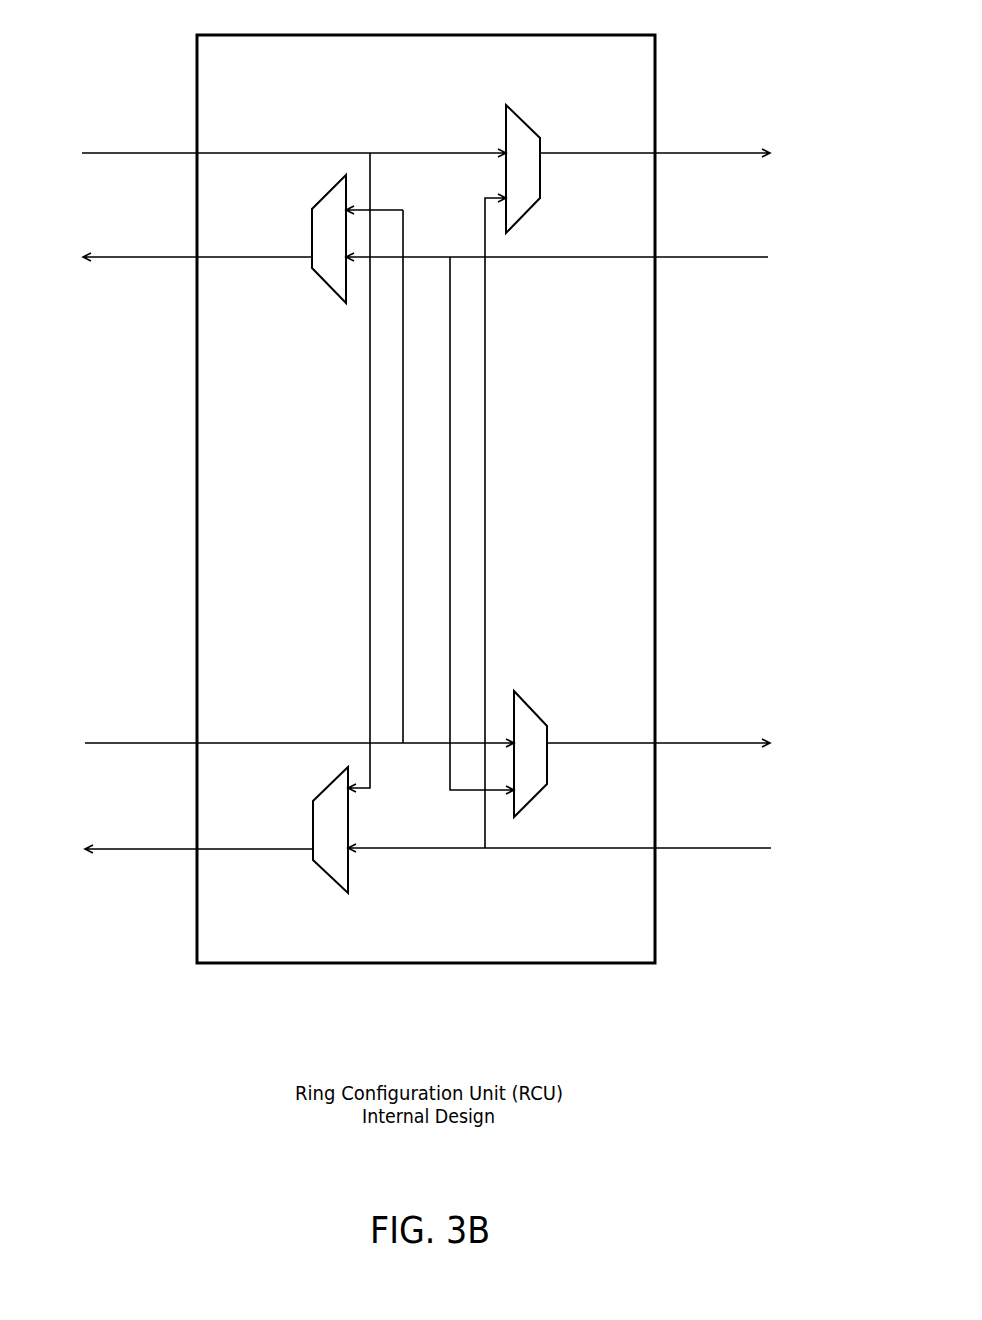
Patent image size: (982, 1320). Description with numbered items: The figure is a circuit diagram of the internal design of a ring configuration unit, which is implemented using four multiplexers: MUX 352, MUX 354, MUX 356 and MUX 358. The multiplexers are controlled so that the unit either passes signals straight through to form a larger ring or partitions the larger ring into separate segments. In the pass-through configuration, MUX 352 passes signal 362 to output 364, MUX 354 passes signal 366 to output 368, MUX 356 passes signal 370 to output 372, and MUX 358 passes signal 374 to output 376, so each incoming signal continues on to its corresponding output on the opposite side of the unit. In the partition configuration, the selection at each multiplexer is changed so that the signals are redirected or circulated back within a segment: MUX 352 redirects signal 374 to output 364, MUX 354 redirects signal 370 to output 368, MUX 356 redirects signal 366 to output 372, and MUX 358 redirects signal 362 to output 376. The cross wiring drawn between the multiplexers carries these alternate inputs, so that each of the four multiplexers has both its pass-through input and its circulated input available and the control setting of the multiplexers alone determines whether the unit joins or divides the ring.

The MUX 352 is at (532, 165).
The MUX 354 is at (334, 228).
The MUX 356 is at (524, 745).
The MUX 358 is at (336, 832).
The signal 362 is at (276, 132).
The output 364 is at (697, 154).
The signal 366 is at (600, 255).
The output 368 is at (170, 244).
The signal 370 is at (272, 735).
The output 372 is at (693, 745).
The signal 374 is at (593, 864).
The output 376 is at (172, 868).